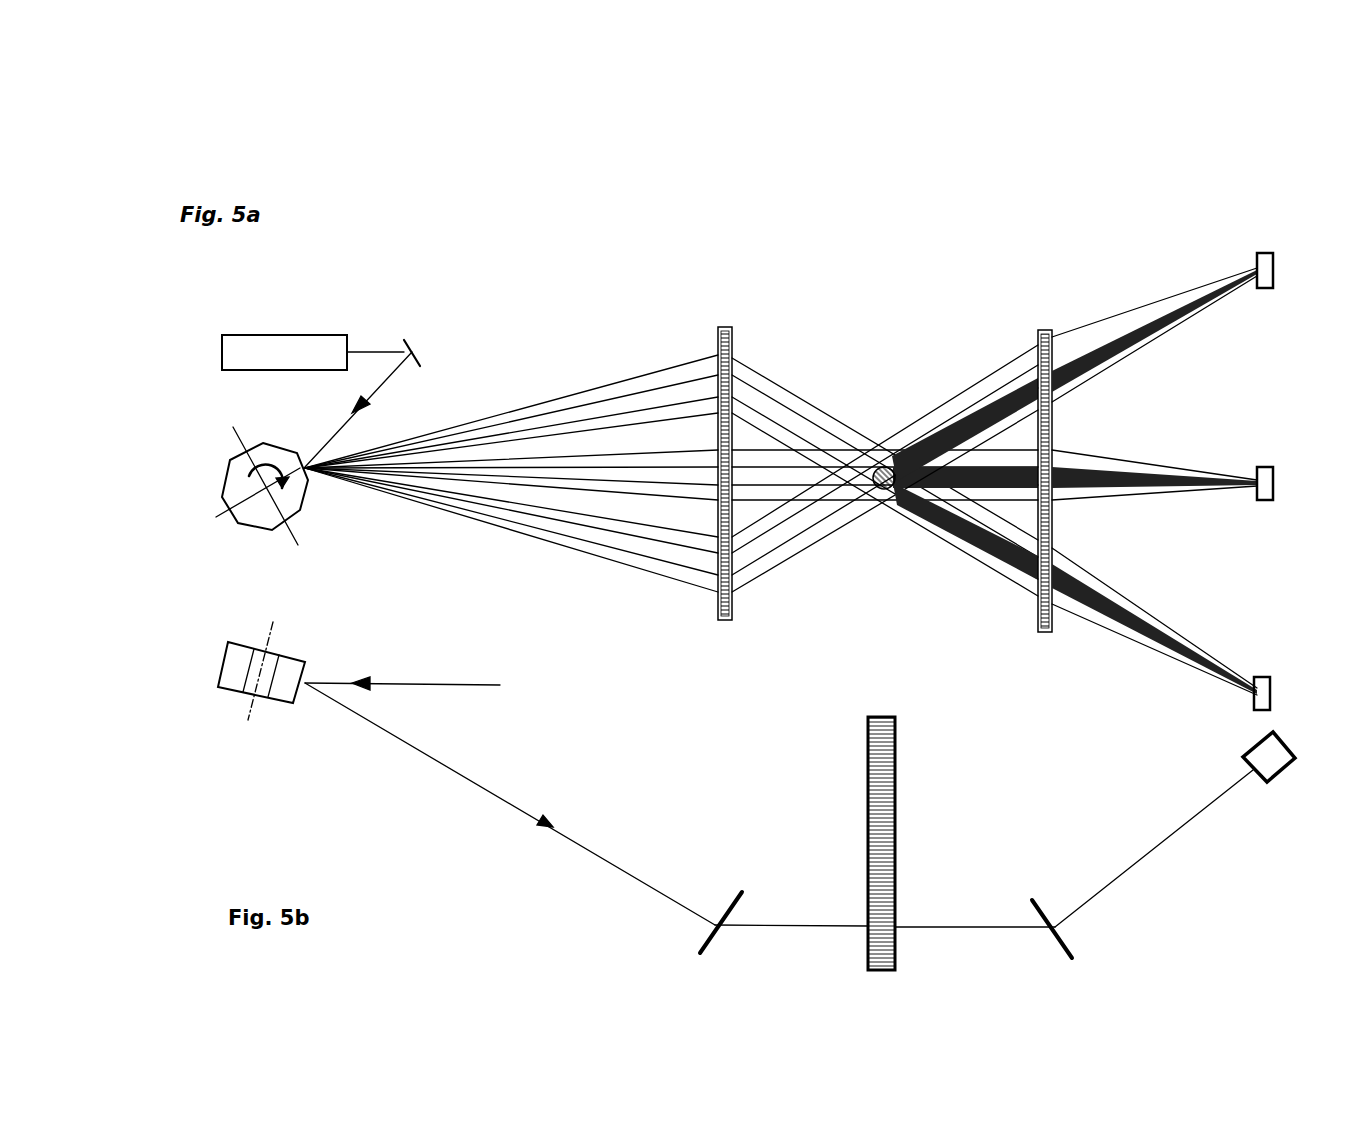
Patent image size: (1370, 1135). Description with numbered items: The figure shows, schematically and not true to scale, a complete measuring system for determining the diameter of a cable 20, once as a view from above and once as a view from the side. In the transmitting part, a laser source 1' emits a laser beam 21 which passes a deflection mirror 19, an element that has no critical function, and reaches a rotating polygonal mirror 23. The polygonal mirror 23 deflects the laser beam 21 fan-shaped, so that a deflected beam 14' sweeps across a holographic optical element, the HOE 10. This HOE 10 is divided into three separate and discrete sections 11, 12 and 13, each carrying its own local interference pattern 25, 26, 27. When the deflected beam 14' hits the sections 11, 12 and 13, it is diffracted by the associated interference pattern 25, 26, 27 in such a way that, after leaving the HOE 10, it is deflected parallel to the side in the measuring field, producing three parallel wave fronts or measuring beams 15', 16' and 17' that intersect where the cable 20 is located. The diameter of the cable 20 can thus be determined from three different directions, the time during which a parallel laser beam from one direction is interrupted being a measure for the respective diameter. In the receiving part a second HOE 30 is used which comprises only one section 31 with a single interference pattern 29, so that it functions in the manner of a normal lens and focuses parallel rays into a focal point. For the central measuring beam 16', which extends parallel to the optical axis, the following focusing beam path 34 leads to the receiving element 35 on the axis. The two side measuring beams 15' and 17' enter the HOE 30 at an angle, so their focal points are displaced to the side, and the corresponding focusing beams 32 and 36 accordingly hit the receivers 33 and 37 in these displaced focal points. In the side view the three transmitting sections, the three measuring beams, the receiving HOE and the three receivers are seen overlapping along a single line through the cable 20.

In FIG. 5A, the laser light source 1' is at (313, 320).
In FIG. 5A, the deflection mirror 19 is at (420, 352).
In FIG. 5A, the laser beam 21 is at (373, 397).
In FIG. 5B, the laser beam 21 is at (392, 682).
In FIG. 5A, the rotating polygonal mirror 23 is at (267, 507).
In FIG. 5B, the rotating polygonal mirror 23 is at (270, 667).
In FIG. 5A, the deflected beam 14' is at (511, 475).
In FIG. 5B, the deflected beam 14' is at (528, 804).
In FIG. 5A, the HOE 10 is at (727, 325).
In FIG. 5B, the HOE 10 is at (626, 938).
In FIG. 5A, the HOE section 11 is at (511, 569).
In FIG. 5B, the HOE section 11 is at (626, 938).
In FIG. 5A, the HOE section 12 is at (511, 537).
In FIG. 5B, the HOE section 12 is at (626, 938).
In FIG. 5A, the HOE section 13 is at (511, 374).
In FIG. 5B, the HOE section 13 is at (626, 938).
In FIG. 5A, the interference pattern 25 is at (713, 587).
In FIG. 5B, the interference pattern 25 is at (626, 938).
In FIG. 5A, the interference pattern 26 is at (597, 543).
In FIG. 5B, the interference pattern 26 is at (626, 938).
In FIG. 5A, the interference pattern 27 is at (717, 410).
In FIG. 5B, the interference pattern 27 is at (713, 938).
In FIG. 5A, the cable 20 is at (885, 465).
In FIG. 5B, the cable 20 is at (885, 843).
In FIG. 5A, the measuring beam 15' is at (885, 451).
In FIG. 5B, the measuring beam 15' is at (994, 882).
In FIG. 5A, the central measuring beam 16' is at (885, 540).
In FIG. 5B, the central measuring beam 16' is at (994, 882).
In FIG. 5A, the measuring beam 17' is at (885, 485).
In FIG. 5B, the measuring beam 17' is at (994, 882).
In FIG. 5A, the HOE 30 is at (1055, 332).
In FIG. 5B, the HOE 30 is at (1120, 948).
In FIG. 5A, the section 31 is at (965, 421).
In FIG. 5B, the section 31 is at (1120, 948).
In FIG. 5A, the interference pattern 29 is at (1003, 393).
In FIG. 5B, the interference pattern 29 is at (1060, 937).
In FIG. 5A, the focusing beam 32 is at (1127, 350).
In FIG. 5B, the focusing beam 32 is at (1193, 860).
In FIG. 5A, the focusing beam path 34 is at (1093, 490).
In FIG. 5B, the focusing beam path 34 is at (1193, 860).
In FIG. 5A, the focusing beam 36 is at (1123, 632).
In FIG. 5B, the focusing beam 36 is at (1143, 862).
In FIG. 5A, the receiver 33 is at (1273, 272).
In FIG. 5B, the receiver 33 is at (1185, 757).
In FIG. 5A, the receiving element 35 is at (1273, 485).
In FIG. 5B, the receiving element 35 is at (1185, 757).
In FIG. 5A, the receiver 37 is at (1270, 693).
In FIG. 5B, the receiver 37 is at (1253, 747).